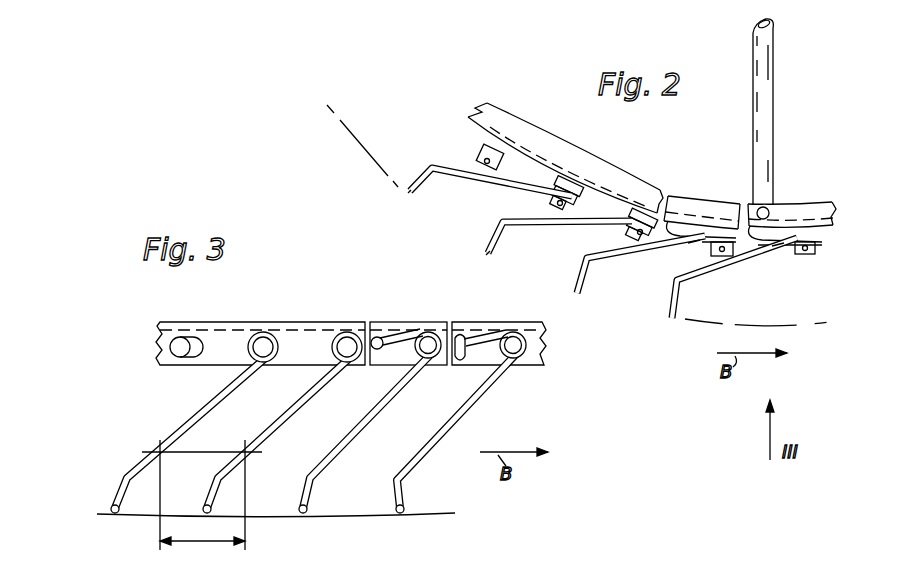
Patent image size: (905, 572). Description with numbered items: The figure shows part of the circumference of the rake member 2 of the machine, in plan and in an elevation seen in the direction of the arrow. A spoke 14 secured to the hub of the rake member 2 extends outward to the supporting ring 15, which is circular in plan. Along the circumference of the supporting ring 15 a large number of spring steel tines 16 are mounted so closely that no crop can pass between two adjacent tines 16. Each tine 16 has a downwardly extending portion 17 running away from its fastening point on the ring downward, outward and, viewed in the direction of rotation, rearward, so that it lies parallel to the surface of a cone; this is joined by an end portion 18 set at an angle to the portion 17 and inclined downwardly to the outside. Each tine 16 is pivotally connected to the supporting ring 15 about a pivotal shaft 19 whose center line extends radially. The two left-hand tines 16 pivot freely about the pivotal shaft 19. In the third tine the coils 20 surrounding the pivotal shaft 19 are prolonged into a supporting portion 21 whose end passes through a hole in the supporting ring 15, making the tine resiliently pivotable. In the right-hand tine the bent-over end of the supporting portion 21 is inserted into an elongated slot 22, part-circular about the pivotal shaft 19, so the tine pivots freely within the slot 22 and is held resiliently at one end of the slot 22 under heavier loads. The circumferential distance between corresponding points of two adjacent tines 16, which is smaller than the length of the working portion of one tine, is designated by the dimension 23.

In FIG. 2, the rake member 2 is at (511, 106).
In FIG. 3, the rake member 2 is at (357, 492).
In FIG. 2, the spoke 14 is at (781, 45).
In FIG. 2, the supporting ring 15 is at (655, 186).
In FIG. 3, the supporting ring 15 is at (383, 322).
In FIG. 2, the tine 16 is at (444, 170).
In FIG. 3, the tine 16 is at (170, 426).
In FIG. 2, the downwardly extending portion 17 is at (494, 188).
In FIG. 3, the downwardly extending portion 17 is at (211, 409).
In FIG. 2, the end portion 18 is at (434, 240).
In FIG. 3, the end portion 18 is at (215, 497).
In FIG. 2, the pivotal shaft 19 is at (482, 150).
In FIG. 3, the pivotal shaft 19 is at (185, 360).
In FIG. 2, the coils 20 is at (576, 228).
In FIG. 3, the coils 20 is at (253, 332).
In FIG. 2, the supporting portion 21 is at (690, 247).
In FIG. 3, the supporting portion 21 is at (393, 352).
In FIG. 3, the elongated slot 22 is at (468, 329).
In FIG. 3, the distance between adjacent tines 23 is at (202, 495).